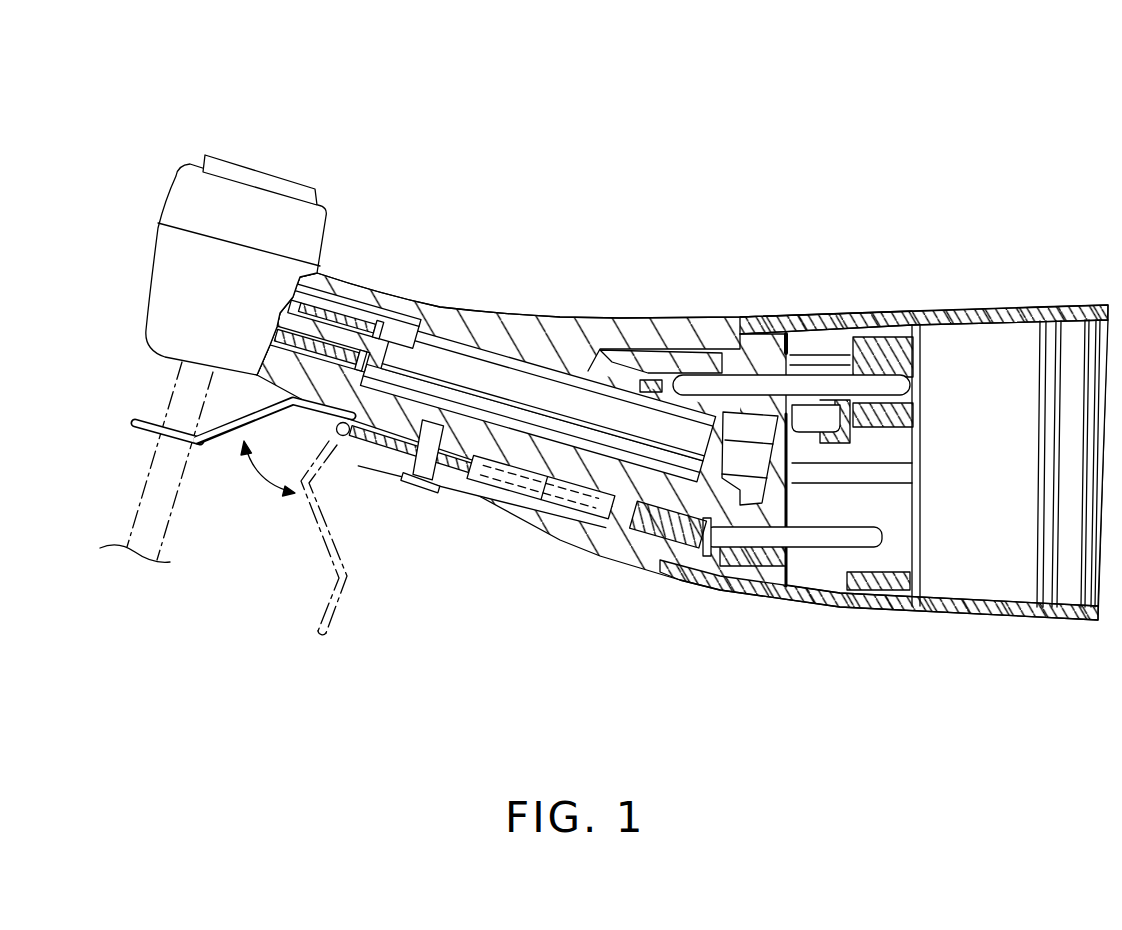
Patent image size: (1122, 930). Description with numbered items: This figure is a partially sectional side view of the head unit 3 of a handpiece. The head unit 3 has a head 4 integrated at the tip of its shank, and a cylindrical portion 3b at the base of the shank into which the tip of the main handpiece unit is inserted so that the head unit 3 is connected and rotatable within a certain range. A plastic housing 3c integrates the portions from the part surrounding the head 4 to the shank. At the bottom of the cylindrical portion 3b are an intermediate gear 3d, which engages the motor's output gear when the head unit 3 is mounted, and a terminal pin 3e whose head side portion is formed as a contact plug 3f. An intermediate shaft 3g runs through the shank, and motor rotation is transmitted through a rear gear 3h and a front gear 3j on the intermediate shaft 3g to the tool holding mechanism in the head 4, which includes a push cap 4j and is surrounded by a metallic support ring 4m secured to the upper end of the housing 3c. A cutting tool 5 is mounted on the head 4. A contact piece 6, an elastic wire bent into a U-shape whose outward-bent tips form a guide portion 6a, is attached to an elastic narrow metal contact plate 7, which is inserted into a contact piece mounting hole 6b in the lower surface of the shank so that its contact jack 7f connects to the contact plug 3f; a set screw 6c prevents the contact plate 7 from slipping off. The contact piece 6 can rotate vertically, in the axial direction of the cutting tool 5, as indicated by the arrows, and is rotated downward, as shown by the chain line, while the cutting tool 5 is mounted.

The head unit 3 is at (706, 312).
The cylindrical portion 3b is at (1006, 305).
The plastic housing 3c is at (572, 320).
The intermediate gear 3d is at (830, 313).
The terminal pin 3e is at (823, 540).
The contact plug 3f is at (640, 520).
The intermediate shaft 3g is at (457, 327).
The rear gear 3h is at (738, 487).
The front gear 3j is at (287, 320).
The head 4 is at (147, 233).
The push cap 4j is at (257, 173).
The support ring 4m is at (295, 226).
The cutting tool 5 is at (147, 513).
The contact piece 6 is at (196, 555).
The guide portion 6a is at (132, 420).
The contact piece mounting hole 6b is at (460, 462).
The set screw 6c is at (425, 465).
The contact plate 7 is at (337, 436).
The contact jack 7f is at (500, 490).